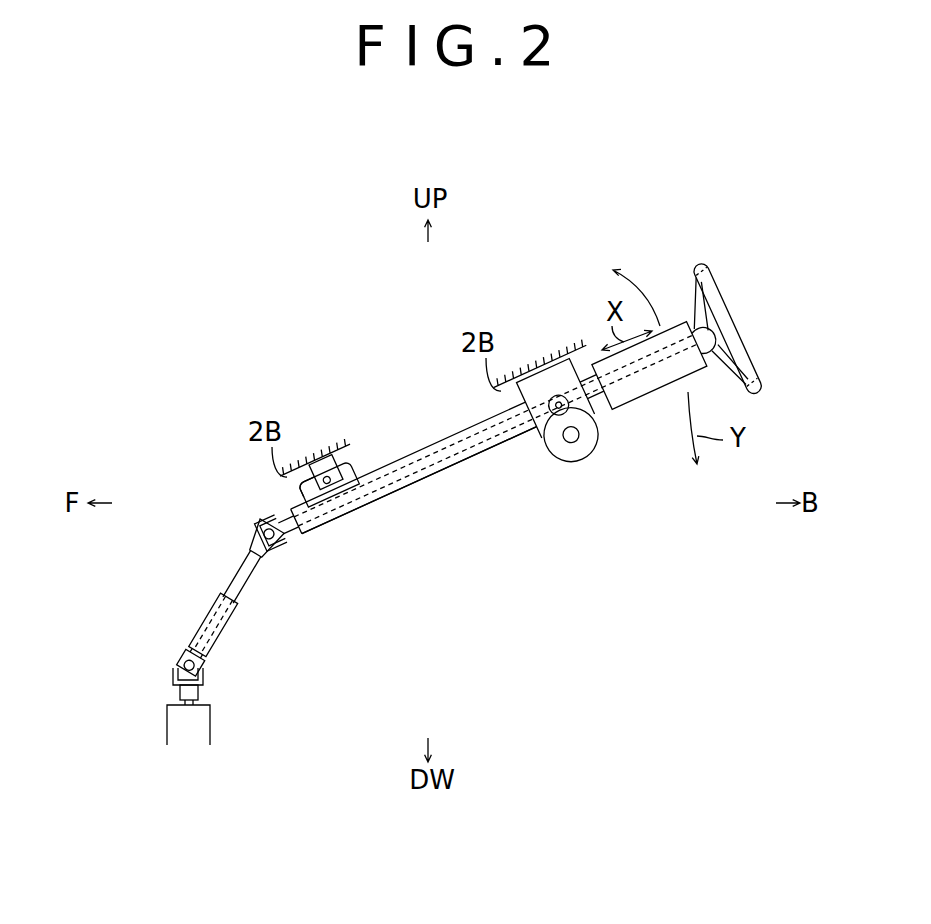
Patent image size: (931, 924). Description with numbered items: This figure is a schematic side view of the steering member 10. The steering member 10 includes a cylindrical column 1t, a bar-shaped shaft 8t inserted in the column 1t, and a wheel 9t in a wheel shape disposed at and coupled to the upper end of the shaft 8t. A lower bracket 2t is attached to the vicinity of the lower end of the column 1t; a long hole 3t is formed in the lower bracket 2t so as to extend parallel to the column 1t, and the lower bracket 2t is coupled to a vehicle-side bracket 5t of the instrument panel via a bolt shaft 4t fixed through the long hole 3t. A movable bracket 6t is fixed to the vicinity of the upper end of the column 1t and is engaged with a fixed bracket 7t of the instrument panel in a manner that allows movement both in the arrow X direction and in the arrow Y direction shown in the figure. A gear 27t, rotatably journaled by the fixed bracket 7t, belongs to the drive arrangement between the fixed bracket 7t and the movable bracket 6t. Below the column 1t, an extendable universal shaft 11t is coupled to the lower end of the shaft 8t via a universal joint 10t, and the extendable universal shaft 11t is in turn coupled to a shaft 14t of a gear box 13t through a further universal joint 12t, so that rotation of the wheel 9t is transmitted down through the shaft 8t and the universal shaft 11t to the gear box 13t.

The column 1t is at (425, 481).
The lower bracket 2t is at (356, 478).
The long hole 3t is at (300, 490).
The bolt shaft 4t is at (329, 486).
The vehicle-side bracket 5t is at (322, 463).
The movable bracket 6t is at (582, 422).
The fixed bracket 7t is at (565, 380).
The shaft 8t is at (463, 447).
The wheel 9t is at (730, 313).
The steering member 10 is at (492, 465).
The universal joint 10t is at (242, 528).
The extendable universal shaft 11t is at (248, 618).
The universal joint 12t is at (157, 666).
The gear box 13t is at (200, 731).
The shaft 14t is at (196, 700).
The gear 27t is at (550, 394).